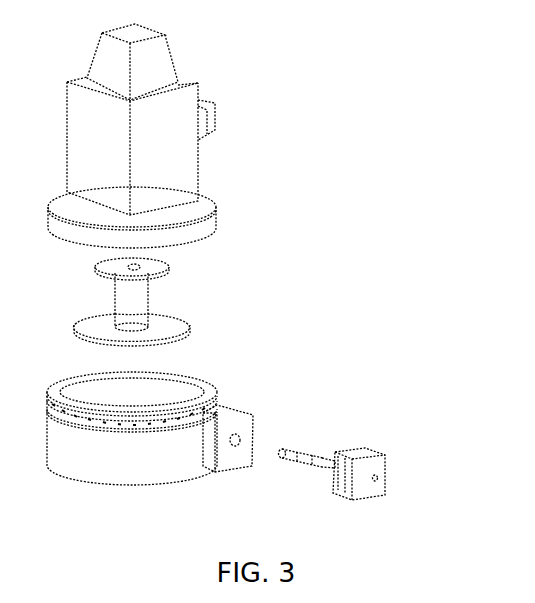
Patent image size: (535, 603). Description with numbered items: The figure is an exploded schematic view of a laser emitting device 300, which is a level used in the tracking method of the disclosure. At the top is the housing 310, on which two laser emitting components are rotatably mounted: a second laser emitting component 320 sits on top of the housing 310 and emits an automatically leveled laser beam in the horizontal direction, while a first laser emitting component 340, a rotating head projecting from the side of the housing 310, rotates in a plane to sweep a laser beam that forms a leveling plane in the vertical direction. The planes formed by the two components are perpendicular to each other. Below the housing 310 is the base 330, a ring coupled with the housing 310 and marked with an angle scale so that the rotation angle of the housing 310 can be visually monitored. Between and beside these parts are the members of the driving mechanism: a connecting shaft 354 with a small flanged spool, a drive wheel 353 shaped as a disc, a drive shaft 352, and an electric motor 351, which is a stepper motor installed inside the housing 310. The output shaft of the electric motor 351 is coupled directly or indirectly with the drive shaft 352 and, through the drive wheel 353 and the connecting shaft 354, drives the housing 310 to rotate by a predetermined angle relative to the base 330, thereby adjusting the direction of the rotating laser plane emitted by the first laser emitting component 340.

The laser emitting device 300 is at (302, 93).
The housing 310 is at (136, 144).
The second laser emitting component 320 is at (123, 71).
The base 330 is at (235, 408).
The first laser emitting component 340 is at (206, 131).
The electric motor 351 is at (378, 481).
The drive shaft 352 is at (288, 452).
The drive wheel 353 is at (188, 327).
The connecting shaft 354 is at (140, 300).